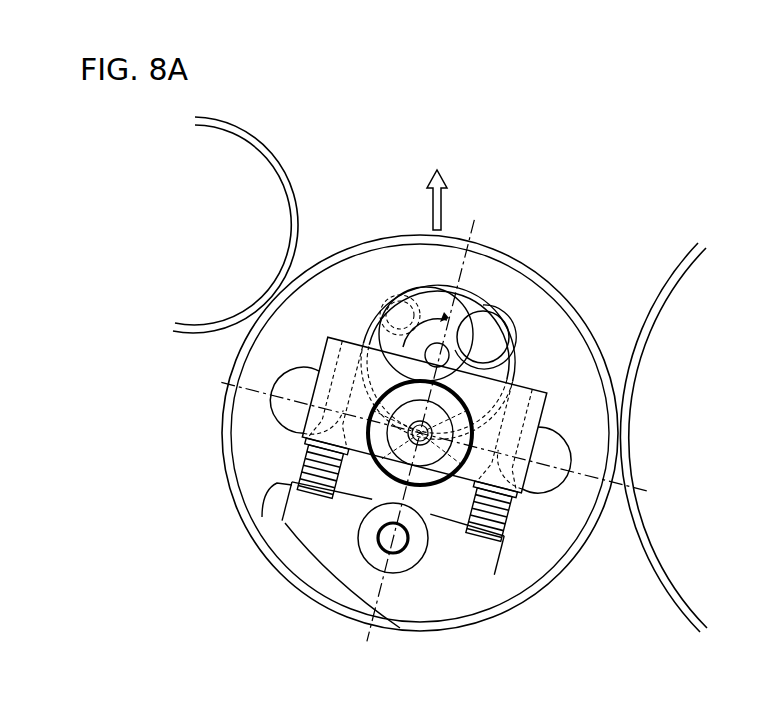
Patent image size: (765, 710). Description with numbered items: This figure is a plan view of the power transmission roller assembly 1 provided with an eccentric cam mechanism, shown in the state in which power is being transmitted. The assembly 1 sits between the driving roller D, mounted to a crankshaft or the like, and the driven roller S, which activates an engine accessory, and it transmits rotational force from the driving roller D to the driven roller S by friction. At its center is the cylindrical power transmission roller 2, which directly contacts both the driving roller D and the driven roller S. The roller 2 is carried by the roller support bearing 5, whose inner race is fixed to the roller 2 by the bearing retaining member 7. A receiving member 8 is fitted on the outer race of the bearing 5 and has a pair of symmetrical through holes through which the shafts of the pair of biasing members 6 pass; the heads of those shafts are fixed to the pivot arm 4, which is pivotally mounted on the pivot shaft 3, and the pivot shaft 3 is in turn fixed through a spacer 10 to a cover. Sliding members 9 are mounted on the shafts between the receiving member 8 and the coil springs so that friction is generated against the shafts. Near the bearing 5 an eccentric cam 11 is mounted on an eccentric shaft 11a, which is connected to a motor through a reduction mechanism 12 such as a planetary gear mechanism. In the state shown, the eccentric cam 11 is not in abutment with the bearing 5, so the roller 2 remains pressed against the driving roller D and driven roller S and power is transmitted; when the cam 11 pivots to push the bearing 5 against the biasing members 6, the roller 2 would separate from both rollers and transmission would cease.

The power transmission roller assembly 1 is at (592, 303).
The power transmission roller 2 is at (232, 490).
The pivot shaft 3 is at (403, 551).
The pivot arm 4 is at (337, 548).
The roller support bearing 5 is at (362, 403).
The biasing members 6 is at (283, 488).
The bearing retaining member 7 is at (440, 440).
The receiving member 8 is at (327, 379).
The sliding members 9 is at (305, 413).
The spacer 10 is at (418, 543).
The eccentric cam 11 is at (425, 300).
The eccentric shaft 11a is at (444, 345).
The reduction mechanism 12 is at (494, 337).
The driven roller S is at (297, 187).
The driving roller D is at (670, 280).